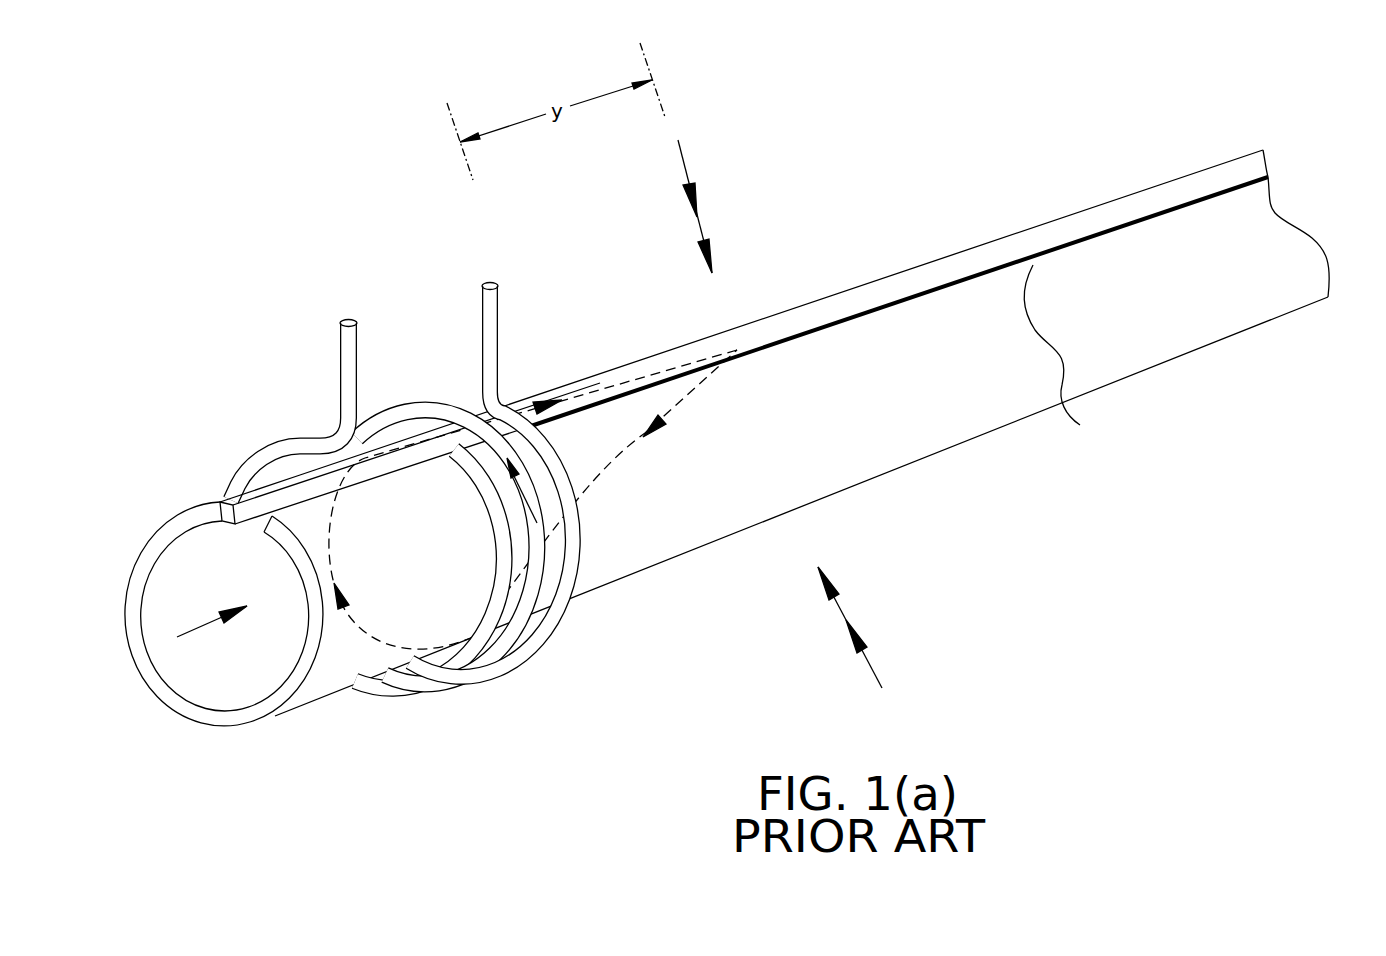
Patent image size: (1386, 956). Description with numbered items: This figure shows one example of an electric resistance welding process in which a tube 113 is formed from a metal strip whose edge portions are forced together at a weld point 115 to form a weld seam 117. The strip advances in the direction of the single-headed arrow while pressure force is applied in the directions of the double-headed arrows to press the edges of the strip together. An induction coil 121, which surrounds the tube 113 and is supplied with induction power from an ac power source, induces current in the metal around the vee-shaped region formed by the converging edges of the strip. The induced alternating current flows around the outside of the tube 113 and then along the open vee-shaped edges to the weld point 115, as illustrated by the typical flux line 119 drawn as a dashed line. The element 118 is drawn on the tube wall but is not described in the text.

The tube 113 is at (921, 392).
The weld point 115 is at (745, 328).
The weld seam 117 is at (1297, 167).
The tube wall 118 is at (1071, 359).
The flux line 119 is at (620, 453).
The induction coil 121 is at (348, 386).